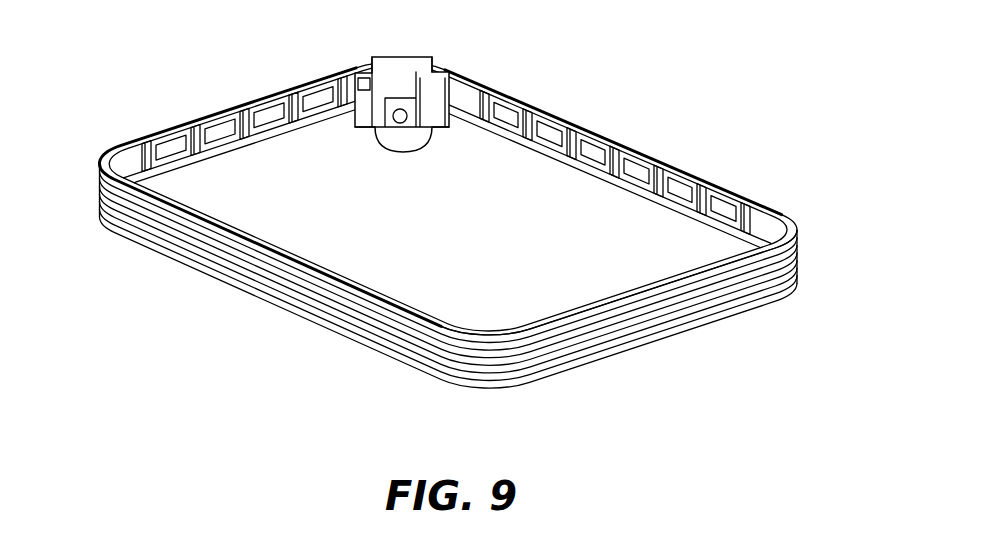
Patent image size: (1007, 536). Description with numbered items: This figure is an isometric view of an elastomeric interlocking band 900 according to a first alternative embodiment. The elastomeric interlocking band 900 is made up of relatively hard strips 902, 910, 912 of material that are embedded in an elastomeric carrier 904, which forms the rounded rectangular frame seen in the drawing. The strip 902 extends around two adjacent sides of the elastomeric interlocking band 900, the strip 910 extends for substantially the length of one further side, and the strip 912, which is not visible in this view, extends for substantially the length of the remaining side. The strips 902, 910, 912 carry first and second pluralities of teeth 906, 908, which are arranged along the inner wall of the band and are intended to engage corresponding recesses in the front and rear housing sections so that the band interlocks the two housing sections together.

The elastomeric interlocking band 900 is at (656, 430).
The strip 902 is at (613, 160).
The elastomeric carrier 904 is at (786, 222).
The first plurality of teeth 906 is at (512, 105).
The second plurality of teeth 908 is at (553, 157).
The strip 910 is at (348, 286).
The strip 912 is at (606, 290).